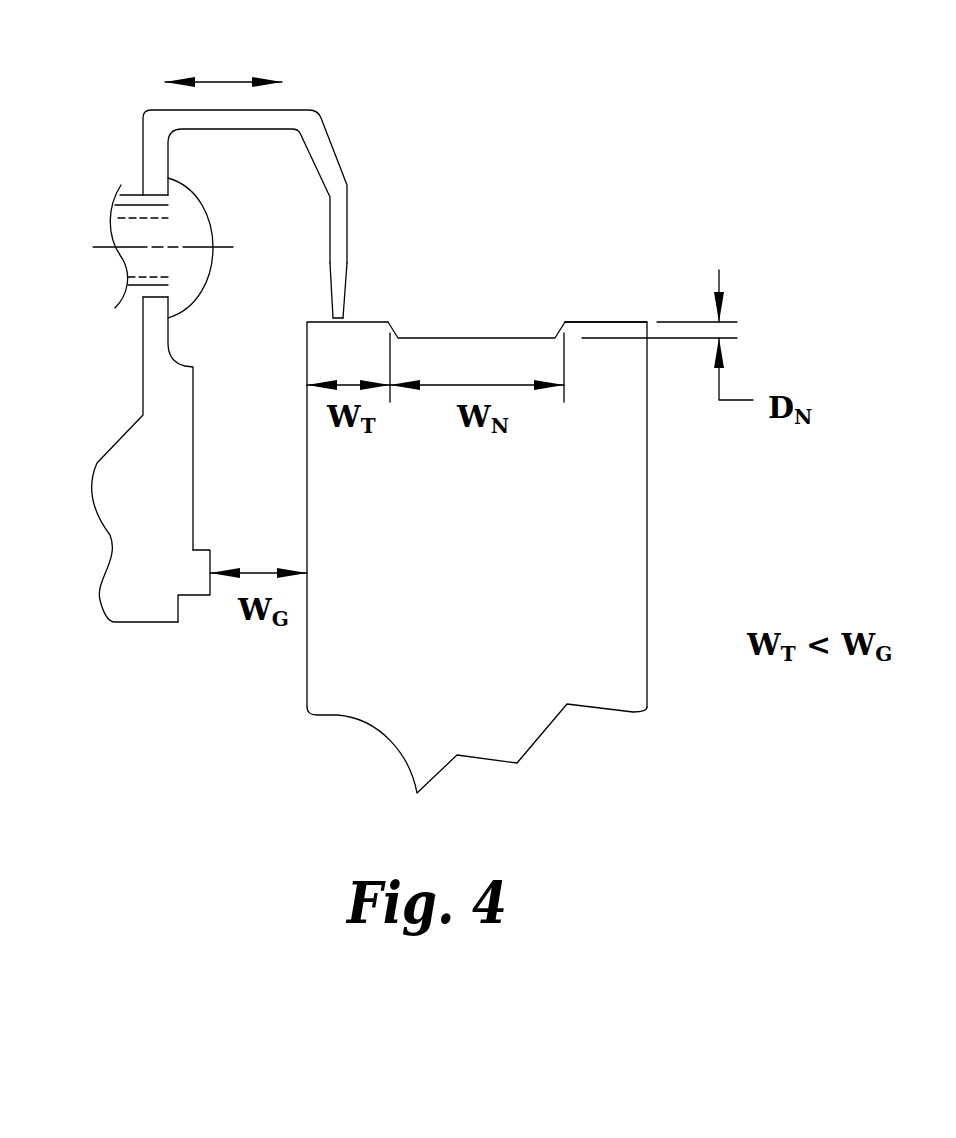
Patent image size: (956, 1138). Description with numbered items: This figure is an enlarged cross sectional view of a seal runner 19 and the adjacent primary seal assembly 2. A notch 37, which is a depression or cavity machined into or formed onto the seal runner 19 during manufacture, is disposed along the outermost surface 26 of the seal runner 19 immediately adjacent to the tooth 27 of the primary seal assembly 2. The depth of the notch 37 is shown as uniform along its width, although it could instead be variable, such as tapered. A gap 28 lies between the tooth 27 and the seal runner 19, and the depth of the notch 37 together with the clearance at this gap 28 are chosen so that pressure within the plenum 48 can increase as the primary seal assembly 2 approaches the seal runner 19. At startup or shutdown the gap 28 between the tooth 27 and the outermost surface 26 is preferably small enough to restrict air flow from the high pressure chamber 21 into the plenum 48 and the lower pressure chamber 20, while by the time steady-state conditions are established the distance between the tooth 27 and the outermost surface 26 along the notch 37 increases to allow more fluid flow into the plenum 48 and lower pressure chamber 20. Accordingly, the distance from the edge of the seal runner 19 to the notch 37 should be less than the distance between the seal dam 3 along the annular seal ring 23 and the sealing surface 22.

The primary seal assembly 2 is at (145, 110).
The seal dam 3 is at (207, 597).
The seal runner 19 is at (605, 568).
The lower pressure chamber 20 is at (73, 718).
The high pressure chamber 21 is at (581, 182).
The sealing surface 22 is at (306, 677).
The annular seal ring 23 is at (167, 412).
The outermost surface 26 is at (605, 322).
The tooth 27 is at (348, 202).
The gap 28 is at (330, 318).
The notch 37 is at (477, 337).
The plenum 48 is at (278, 206).